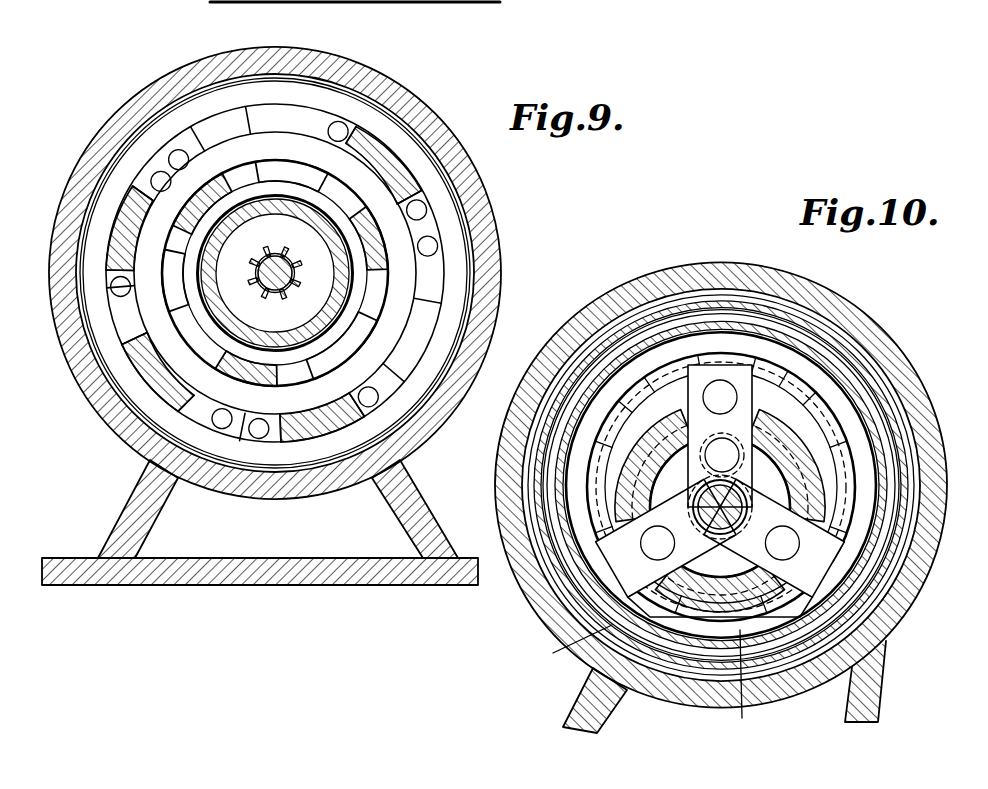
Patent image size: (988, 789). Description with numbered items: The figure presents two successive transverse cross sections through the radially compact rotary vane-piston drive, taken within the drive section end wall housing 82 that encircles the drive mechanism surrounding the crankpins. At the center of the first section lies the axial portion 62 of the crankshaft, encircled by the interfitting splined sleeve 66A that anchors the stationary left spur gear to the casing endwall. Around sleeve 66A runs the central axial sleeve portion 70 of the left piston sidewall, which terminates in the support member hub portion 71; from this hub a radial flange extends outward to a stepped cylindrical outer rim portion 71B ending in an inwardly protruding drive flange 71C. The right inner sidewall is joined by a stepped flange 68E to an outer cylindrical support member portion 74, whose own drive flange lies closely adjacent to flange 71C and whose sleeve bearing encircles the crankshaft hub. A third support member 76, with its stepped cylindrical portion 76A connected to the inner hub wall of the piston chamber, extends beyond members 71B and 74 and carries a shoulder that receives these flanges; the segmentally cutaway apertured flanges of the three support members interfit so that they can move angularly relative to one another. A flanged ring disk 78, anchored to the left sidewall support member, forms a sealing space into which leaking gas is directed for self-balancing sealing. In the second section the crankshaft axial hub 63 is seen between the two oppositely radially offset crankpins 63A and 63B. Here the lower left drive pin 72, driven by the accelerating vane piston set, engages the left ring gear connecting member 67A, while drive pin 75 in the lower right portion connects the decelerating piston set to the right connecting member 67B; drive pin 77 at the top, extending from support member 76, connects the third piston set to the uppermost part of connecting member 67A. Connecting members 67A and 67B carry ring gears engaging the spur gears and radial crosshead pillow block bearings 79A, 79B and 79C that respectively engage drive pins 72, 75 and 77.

In FIG. 9, the drive section end wall housing 82 is at (128, 108).
In FIG. 10, the drive section end wall housing 82 is at (690, 272).
In FIG. 9, the stepped cylindrical support member 76 is at (278, 98).
In FIG. 10, the stepped cylindrical support member 76 is at (575, 330).
In FIG. 9, the stepped cylindrical support member 76A is at (268, 195).
In FIG. 9, the stepped flange 68E is at (125, 215).
In FIG. 9, the flanged ring disk 78 is at (203, 197).
In FIG. 9, the support member hub portion 71 is at (320, 308).
In FIG. 9, the axial portion of the crankshaft 62 is at (283, 258).
In FIG. 9, the central axial sleeve portion 70 is at (252, 288).
In FIG. 9, the splined sleeve 66A is at (245, 292).
In FIG. 10, the stepped cylindrical outer rim portion 71B is at (637, 312).
In FIG. 10, the drive flange 71C is at (592, 318).
In FIG. 10, the radial crosshead pillow block bearing 79C is at (668, 320).
In FIG. 10, the drive pin 77 is at (718, 390).
In FIG. 10, the outer cylindrical support member portion 74 is at (760, 450).
In FIG. 10, the axial hub 63 is at (918, 395).
In FIG. 10, the crankpin 63A is at (700, 600).
In FIG. 10, the crankpin 63B is at (800, 375).
In FIG. 10, the left ring gear connecting member 67A is at (600, 543).
In FIG. 10, the right connecting member 67B is at (622, 458).
In FIG. 10, the drive pin 72 is at (716, 525).
In FIG. 10, the radial crosshead pillow block bearing 79A is at (571, 656).
In FIG. 10, the radial crosshead pillow block bearing 79B is at (745, 718).
In FIG. 10, the drive pin 75 is at (890, 646).